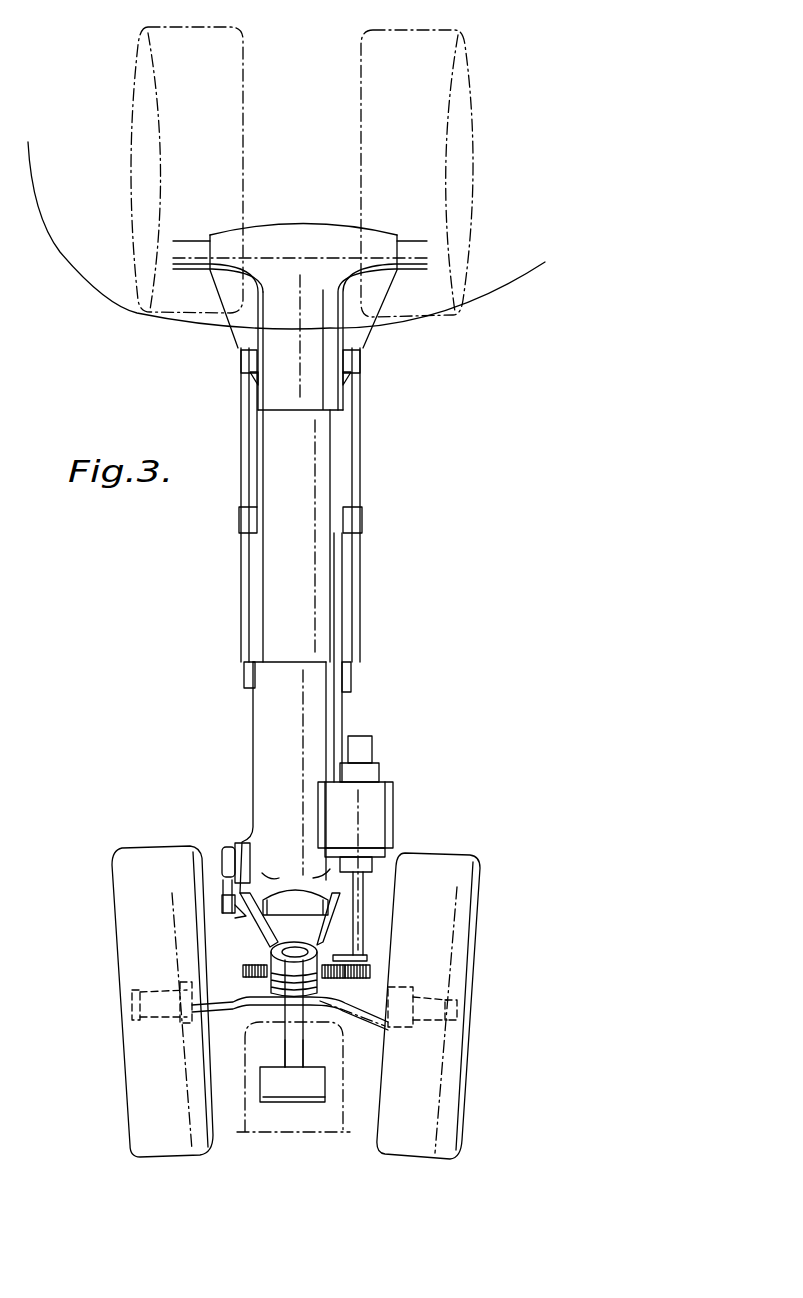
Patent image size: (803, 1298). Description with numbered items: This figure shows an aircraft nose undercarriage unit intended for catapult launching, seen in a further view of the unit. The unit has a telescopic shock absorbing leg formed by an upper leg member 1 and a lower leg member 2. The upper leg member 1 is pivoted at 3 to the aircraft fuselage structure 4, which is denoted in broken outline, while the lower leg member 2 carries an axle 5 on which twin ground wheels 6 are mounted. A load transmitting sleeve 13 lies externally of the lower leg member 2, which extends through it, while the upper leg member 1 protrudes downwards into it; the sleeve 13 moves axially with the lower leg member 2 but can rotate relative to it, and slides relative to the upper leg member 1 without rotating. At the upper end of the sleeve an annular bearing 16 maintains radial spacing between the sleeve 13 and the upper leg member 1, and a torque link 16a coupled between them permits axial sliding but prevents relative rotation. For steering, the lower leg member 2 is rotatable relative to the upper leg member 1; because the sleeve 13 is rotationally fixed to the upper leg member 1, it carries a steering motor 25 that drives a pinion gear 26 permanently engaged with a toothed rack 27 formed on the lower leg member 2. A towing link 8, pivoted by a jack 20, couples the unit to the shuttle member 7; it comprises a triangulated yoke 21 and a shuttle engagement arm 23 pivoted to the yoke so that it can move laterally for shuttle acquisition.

The upper leg member 1 is at (340, 436).
The lower leg member 2 is at (258, 980).
The pivot 3 is at (412, 262).
The aircraft fuselage structure 4 is at (575, 67).
The axle 5 is at (293, 1042).
The ground wheels 6 is at (133, 860).
The shuttle member 7 is at (243, 1063).
The towing link 8 is at (330, 1048).
The load transmitting sleeve 13 is at (342, 707).
The annular bearing 16 is at (318, 667).
The torque link 16a is at (355, 487).
The jack 20 is at (222, 870).
The triangulated yoke 21 is at (250, 950).
The shuttle engagement arm 23 is at (307, 1053).
The steering motor 25 is at (385, 785).
The pinion gear 26 is at (370, 973).
The toothed rack 27 is at (243, 968).